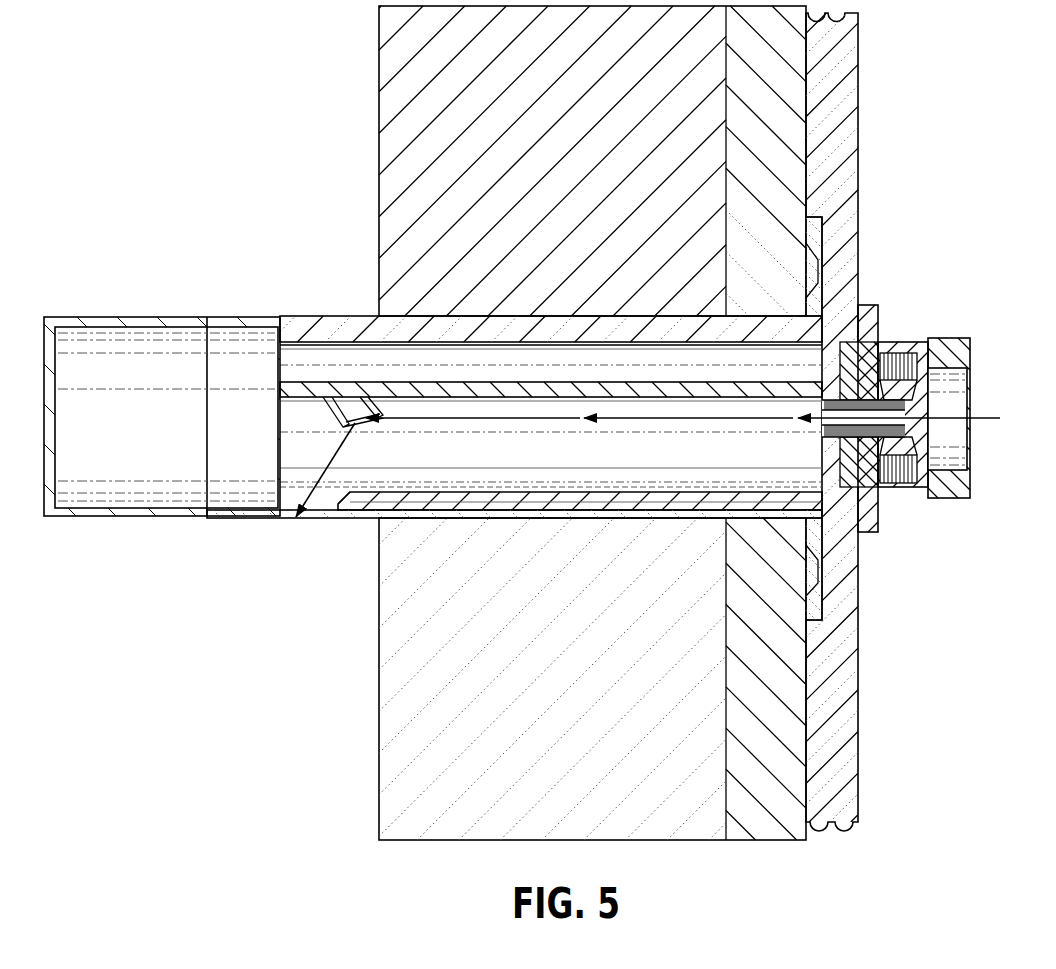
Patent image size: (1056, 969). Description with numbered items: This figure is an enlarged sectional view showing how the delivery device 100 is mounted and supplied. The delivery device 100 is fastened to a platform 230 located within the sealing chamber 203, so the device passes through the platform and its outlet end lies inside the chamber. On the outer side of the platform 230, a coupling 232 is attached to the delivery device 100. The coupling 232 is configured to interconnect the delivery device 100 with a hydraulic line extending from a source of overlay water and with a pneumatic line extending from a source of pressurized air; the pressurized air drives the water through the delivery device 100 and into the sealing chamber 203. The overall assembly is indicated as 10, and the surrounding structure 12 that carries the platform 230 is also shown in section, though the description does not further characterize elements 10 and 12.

The fluid delivery system 10 is at (300, 79).
The housing wall 12 is at (806, 838).
The delivery device 100 is at (316, 316).
The platform 230 is at (858, 80).
The coupling 232 is at (946, 338).
The sealing chamber 203 is at (1045, 239).